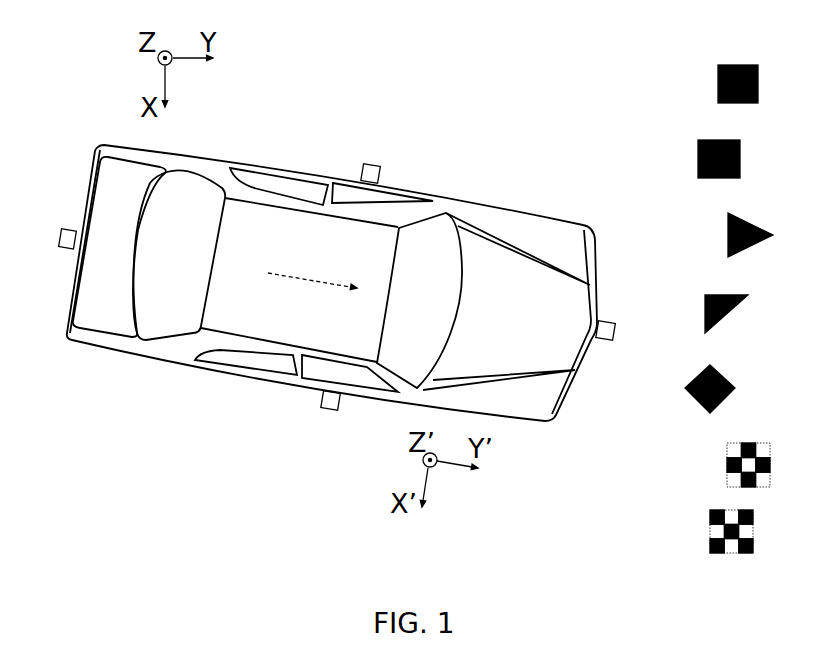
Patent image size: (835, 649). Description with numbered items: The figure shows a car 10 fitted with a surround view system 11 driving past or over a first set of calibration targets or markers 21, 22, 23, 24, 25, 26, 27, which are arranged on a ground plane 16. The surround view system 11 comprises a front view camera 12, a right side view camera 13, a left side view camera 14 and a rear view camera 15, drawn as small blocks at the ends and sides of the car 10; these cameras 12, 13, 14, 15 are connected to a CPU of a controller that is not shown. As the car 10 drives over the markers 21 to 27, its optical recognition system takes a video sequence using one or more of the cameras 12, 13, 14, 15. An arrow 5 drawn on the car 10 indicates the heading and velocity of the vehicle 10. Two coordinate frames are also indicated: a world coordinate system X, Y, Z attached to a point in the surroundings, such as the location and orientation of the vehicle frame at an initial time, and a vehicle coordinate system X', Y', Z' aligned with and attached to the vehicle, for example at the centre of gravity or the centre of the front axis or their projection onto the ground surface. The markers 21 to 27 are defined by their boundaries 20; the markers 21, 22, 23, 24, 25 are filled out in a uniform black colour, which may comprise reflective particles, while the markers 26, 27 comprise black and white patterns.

The arrow 5 is at (315, 278).
The car 10 is at (498, 205).
The surround view system 11 is at (342, 122).
The front view camera 12 is at (600, 342).
The right side view camera 13 is at (322, 398).
The left side view camera 14 is at (373, 165).
The rear view camera 15 is at (59, 237).
The ground plane 16 is at (157, 440).
The boundaries 20 is at (737, 63).
The marker 21 is at (760, 83).
The marker 22 is at (742, 160).
The marker 23 is at (758, 243).
The marker 24 is at (727, 315).
The marker 25 is at (730, 400).
The marker 26 is at (772, 467).
The marker 27 is at (757, 533).